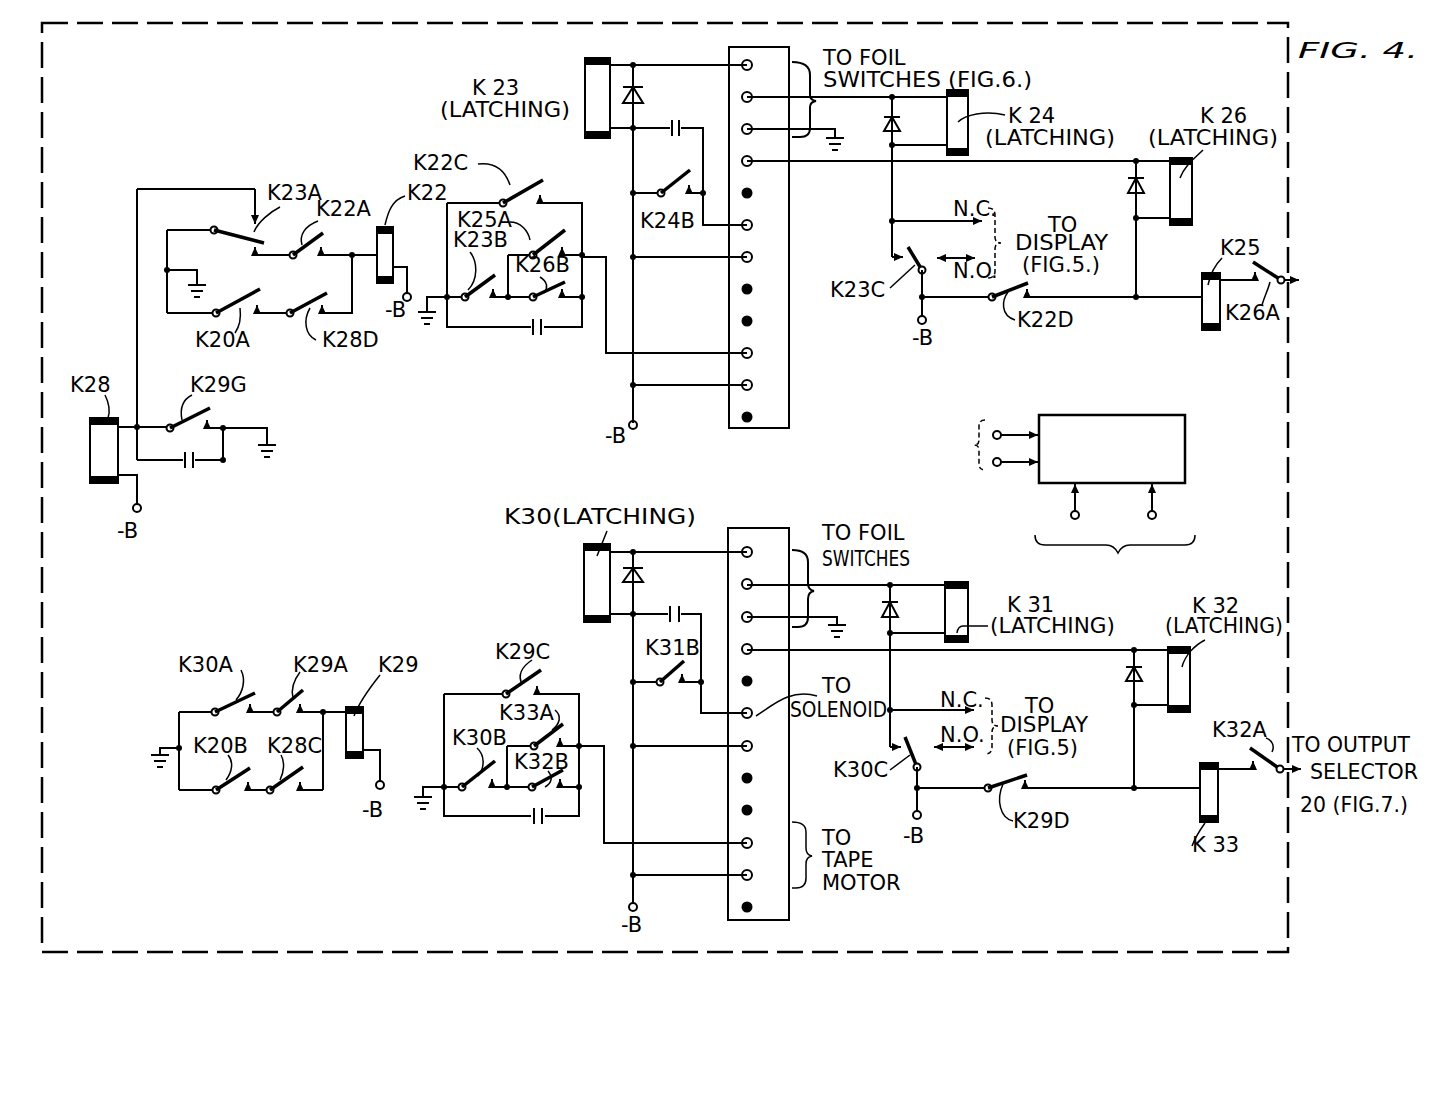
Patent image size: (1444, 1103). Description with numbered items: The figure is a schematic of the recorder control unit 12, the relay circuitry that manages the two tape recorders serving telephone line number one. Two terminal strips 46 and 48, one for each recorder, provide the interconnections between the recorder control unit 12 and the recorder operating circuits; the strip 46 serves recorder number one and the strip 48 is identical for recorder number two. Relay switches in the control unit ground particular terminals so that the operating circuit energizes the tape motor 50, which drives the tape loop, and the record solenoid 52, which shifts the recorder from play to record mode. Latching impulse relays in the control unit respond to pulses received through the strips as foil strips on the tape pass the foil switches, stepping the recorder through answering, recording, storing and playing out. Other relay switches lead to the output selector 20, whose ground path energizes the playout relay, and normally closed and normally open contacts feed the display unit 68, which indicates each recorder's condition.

The recorder control unit 12 is at (442, 950).
The output selector 20 is at (1359, 292).
The terminal strip 46 is at (729, 52).
The terminal strip 48 is at (789, 903).
The AC synchronous motor 50 is at (795, 345).
The record solenoid 52 is at (756, 232).
The display unit 68 is at (1185, 456).